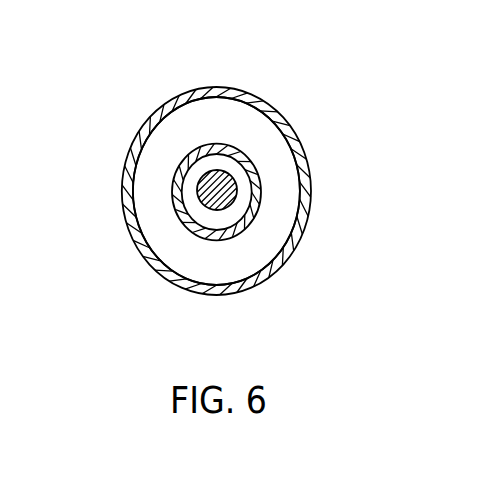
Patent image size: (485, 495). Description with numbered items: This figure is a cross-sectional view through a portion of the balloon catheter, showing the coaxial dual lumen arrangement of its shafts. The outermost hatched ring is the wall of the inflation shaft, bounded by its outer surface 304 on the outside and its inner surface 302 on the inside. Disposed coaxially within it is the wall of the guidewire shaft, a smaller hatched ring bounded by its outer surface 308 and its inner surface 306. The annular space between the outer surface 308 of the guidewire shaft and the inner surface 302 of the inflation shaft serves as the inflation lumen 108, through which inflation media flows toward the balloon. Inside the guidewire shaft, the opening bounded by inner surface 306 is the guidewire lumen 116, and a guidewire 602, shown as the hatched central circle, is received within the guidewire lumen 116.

The inflation lumen 108 is at (283, 203).
The guidewire lumen 116 is at (226, 144).
The inner surface 302 is at (273, 268).
The outer surface 304 is at (302, 167).
The inner surface 306 is at (173, 182).
The outer surface 308 is at (189, 148).
The guidewire 602 is at (232, 178).